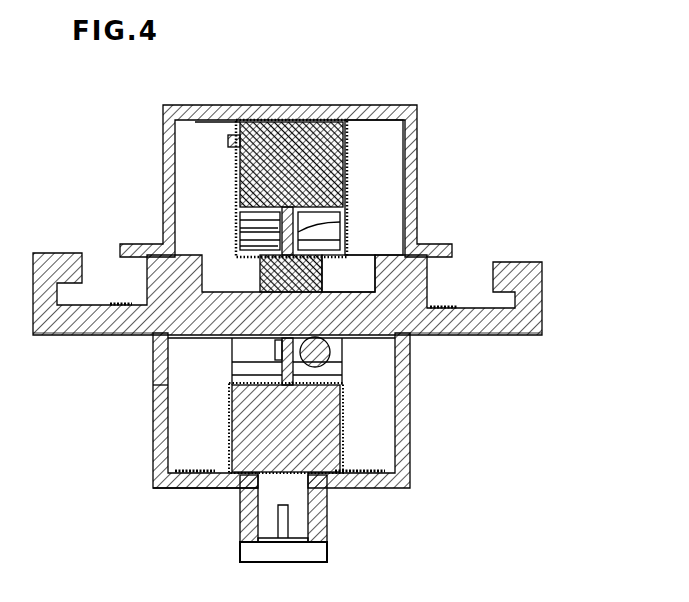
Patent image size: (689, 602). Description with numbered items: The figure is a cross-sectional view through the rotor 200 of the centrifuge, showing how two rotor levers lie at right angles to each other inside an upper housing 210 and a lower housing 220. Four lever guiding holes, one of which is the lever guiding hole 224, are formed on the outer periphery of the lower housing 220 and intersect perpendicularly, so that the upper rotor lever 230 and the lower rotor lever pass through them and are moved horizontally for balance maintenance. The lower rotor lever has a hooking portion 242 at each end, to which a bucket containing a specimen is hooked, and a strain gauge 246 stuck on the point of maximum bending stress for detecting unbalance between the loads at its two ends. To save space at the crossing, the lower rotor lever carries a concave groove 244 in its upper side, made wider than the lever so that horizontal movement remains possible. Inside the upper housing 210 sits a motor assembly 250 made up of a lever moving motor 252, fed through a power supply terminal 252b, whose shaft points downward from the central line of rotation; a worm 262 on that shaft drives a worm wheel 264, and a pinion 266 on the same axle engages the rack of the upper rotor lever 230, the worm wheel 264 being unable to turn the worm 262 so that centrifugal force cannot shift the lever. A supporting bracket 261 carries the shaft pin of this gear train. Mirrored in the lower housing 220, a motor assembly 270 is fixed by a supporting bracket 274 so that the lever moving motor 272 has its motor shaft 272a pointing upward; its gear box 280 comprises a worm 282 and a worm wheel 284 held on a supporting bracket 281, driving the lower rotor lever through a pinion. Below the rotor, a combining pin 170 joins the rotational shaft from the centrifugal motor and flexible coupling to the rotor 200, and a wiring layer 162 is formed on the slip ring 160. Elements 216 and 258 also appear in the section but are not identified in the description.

The slip ring 160 is at (236, 543).
The wiring layer 162 is at (240, 553).
The combining pin 170 is at (278, 508).
The rotor 200 is at (356, 520).
The upper housing 210 is at (417, 130).
The inner plate 216 is at (232, 232).
The lower housing 220 is at (415, 432).
The lever guiding hole 224 is at (412, 335).
The upper rotor lever 230 is at (232, 345).
The hooking portion 242 is at (72, 256).
The concave groove 244 is at (356, 279).
The strain gauge 246 is at (110, 303).
The motor assembly 250 is at (360, 160).
The lever moving motor 252 is at (347, 170).
The power supply terminal 252b is at (228, 145).
The left spacer 258 is at (343, 228).
The supporting bracket 261 is at (355, 190).
The worm 262 is at (343, 218).
The worm wheel 264 is at (232, 218).
The pinion 266 is at (340, 350).
The motor assembly 270 is at (345, 443).
The lever moving motor 272 is at (207, 487).
The motor shaft 272a is at (162, 385).
The supporting bracket 274 is at (345, 462).
The gear box 280 is at (342, 362).
The supporting bracket 281 is at (232, 365).
The worm 282 is at (232, 378).
The worm wheel 284 is at (342, 375).